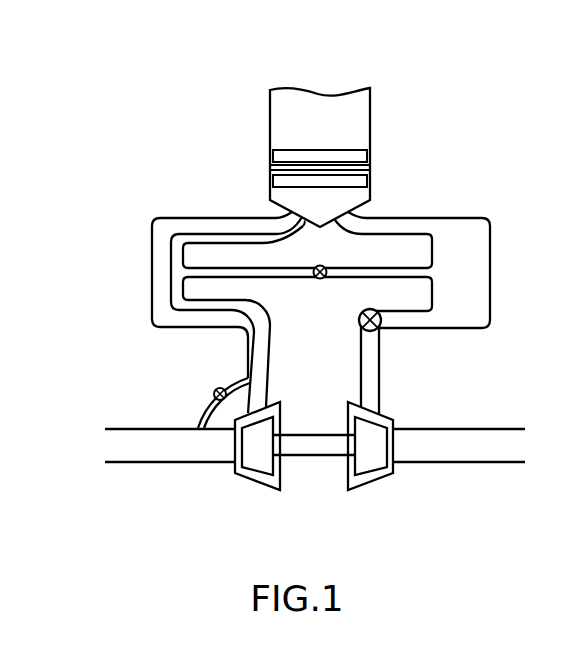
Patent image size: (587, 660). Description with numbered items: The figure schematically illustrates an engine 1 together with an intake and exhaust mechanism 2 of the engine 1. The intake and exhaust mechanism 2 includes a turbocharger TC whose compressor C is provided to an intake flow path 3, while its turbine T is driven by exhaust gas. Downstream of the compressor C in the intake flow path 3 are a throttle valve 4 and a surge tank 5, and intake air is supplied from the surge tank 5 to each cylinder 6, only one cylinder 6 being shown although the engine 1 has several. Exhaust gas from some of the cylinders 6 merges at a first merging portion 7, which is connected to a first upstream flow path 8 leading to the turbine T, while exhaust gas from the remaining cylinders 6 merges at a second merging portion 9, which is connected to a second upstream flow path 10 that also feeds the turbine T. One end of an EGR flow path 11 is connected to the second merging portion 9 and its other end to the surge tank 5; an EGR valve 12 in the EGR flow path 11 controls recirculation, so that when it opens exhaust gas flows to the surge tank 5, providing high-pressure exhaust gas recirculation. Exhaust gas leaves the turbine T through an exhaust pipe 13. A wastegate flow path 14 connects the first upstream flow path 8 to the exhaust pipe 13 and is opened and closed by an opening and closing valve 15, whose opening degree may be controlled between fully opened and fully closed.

The engine 1 is at (88, 91).
The intake and exhaust mechanism 2 is at (140, 133).
The intake flow path 3 is at (380, 381).
The throttle valve 4 is at (381, 318).
The surge tank 5 is at (453, 289).
The cylinder 6 is at (372, 114).
The first merging portion 7 is at (152, 272).
The first upstream flow path 8 is at (245, 360).
The second merging portion 9 is at (187, 255).
The second upstream flow path 10 is at (274, 356).
The EGR flow path 11 is at (283, 279).
The EGR valve 12 is at (322, 280).
The exhaust pipe 13 is at (199, 464).
The wastegate flow path 14 is at (201, 410).
The opening and closing valve 15 is at (214, 393).
The turbine T is at (267, 492).
The compressor C is at (367, 492).
The turbocharger TC is at (311, 433).